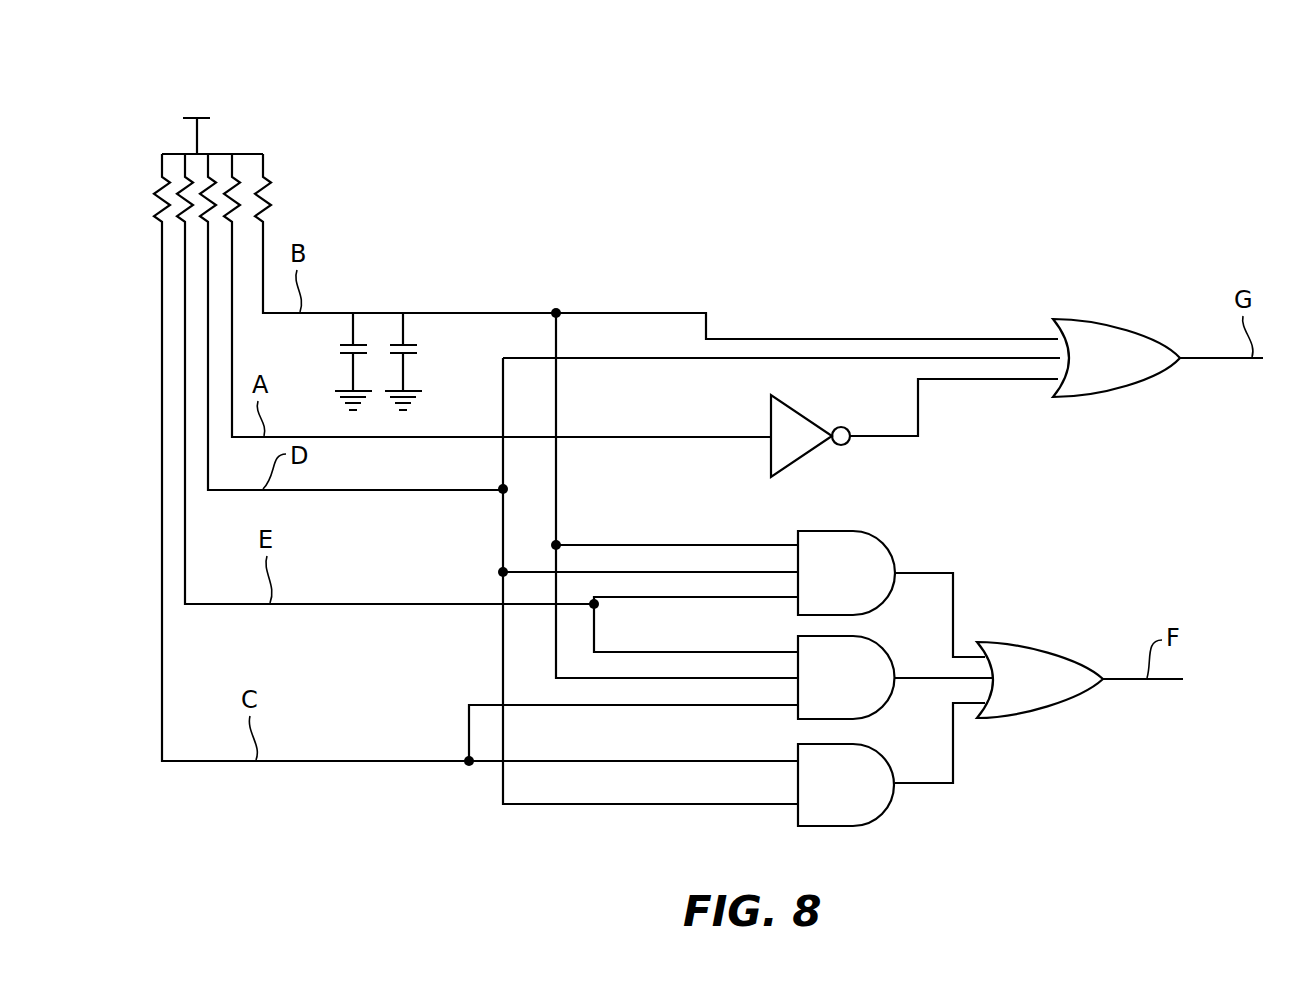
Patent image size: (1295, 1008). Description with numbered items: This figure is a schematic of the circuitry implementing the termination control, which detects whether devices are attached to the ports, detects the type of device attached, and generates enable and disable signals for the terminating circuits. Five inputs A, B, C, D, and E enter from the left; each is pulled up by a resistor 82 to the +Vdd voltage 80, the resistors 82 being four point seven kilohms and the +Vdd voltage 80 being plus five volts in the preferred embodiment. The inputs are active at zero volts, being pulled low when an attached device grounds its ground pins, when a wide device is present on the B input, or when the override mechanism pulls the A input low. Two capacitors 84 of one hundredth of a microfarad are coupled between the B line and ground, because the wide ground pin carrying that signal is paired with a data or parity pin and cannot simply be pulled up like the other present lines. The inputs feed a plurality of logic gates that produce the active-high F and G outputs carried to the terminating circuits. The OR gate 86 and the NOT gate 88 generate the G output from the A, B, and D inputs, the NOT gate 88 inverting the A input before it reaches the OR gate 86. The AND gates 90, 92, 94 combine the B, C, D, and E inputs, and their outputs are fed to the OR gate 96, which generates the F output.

The +Vdd voltage 80 is at (191, 116).
The resistors 82 is at (273, 182).
The capacitors 84 is at (410, 353).
The OR gate 86 is at (1097, 318).
The NOT gate 88 is at (770, 452).
The AND gate 90 is at (870, 540).
The AND gate 92 is at (882, 648).
The AND gate 94 is at (882, 760).
The OR gate 96 is at (1068, 648).